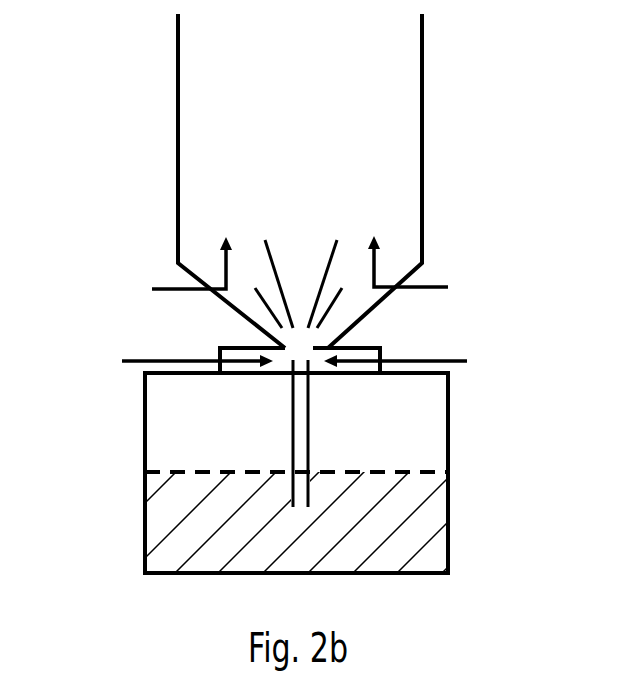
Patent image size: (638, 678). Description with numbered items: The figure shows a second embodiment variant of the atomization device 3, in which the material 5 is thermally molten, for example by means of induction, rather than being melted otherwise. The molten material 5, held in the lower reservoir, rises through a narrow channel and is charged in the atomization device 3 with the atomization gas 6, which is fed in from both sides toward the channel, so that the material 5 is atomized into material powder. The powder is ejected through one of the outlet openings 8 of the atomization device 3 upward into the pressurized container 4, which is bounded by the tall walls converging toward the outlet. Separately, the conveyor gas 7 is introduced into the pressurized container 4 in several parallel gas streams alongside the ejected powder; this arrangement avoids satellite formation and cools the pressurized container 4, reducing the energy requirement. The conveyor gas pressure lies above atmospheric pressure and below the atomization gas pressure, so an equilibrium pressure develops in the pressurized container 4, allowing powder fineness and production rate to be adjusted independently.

The atomization device 3 is at (149, 337).
The pressurized container 4 is at (152, 144).
The material 5 is at (175, 522).
The atomization gas 6 is at (360, 360).
The conveyor gas 7 is at (373, 261).
The outlet openings 8 is at (318, 338).